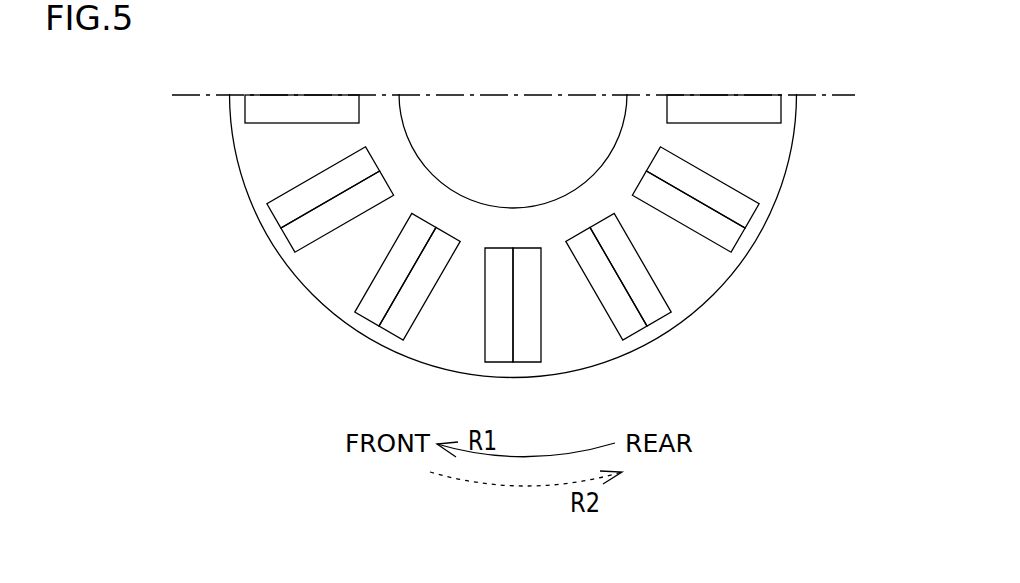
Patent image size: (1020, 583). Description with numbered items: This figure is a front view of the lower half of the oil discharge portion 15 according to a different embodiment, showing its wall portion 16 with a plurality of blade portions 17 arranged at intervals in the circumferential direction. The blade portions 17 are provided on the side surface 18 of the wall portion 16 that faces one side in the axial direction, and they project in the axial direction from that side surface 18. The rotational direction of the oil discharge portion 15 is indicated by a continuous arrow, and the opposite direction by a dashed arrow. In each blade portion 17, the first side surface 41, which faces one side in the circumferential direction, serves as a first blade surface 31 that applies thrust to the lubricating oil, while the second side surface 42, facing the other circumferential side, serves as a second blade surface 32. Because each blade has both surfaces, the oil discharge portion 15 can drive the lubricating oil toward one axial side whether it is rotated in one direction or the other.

The oil discharge portion 15 is at (521, 256).
The wall portion 16 is at (293, 280).
The blade portion 17 is at (521, 256).
The side surface 18 is at (462, 297).
The first blade surface 31 is at (496, 256).
The second blade surface 32 is at (559, 228).
The first side surface 41 is at (783, 275).
The second side surface 42 is at (832, 206).